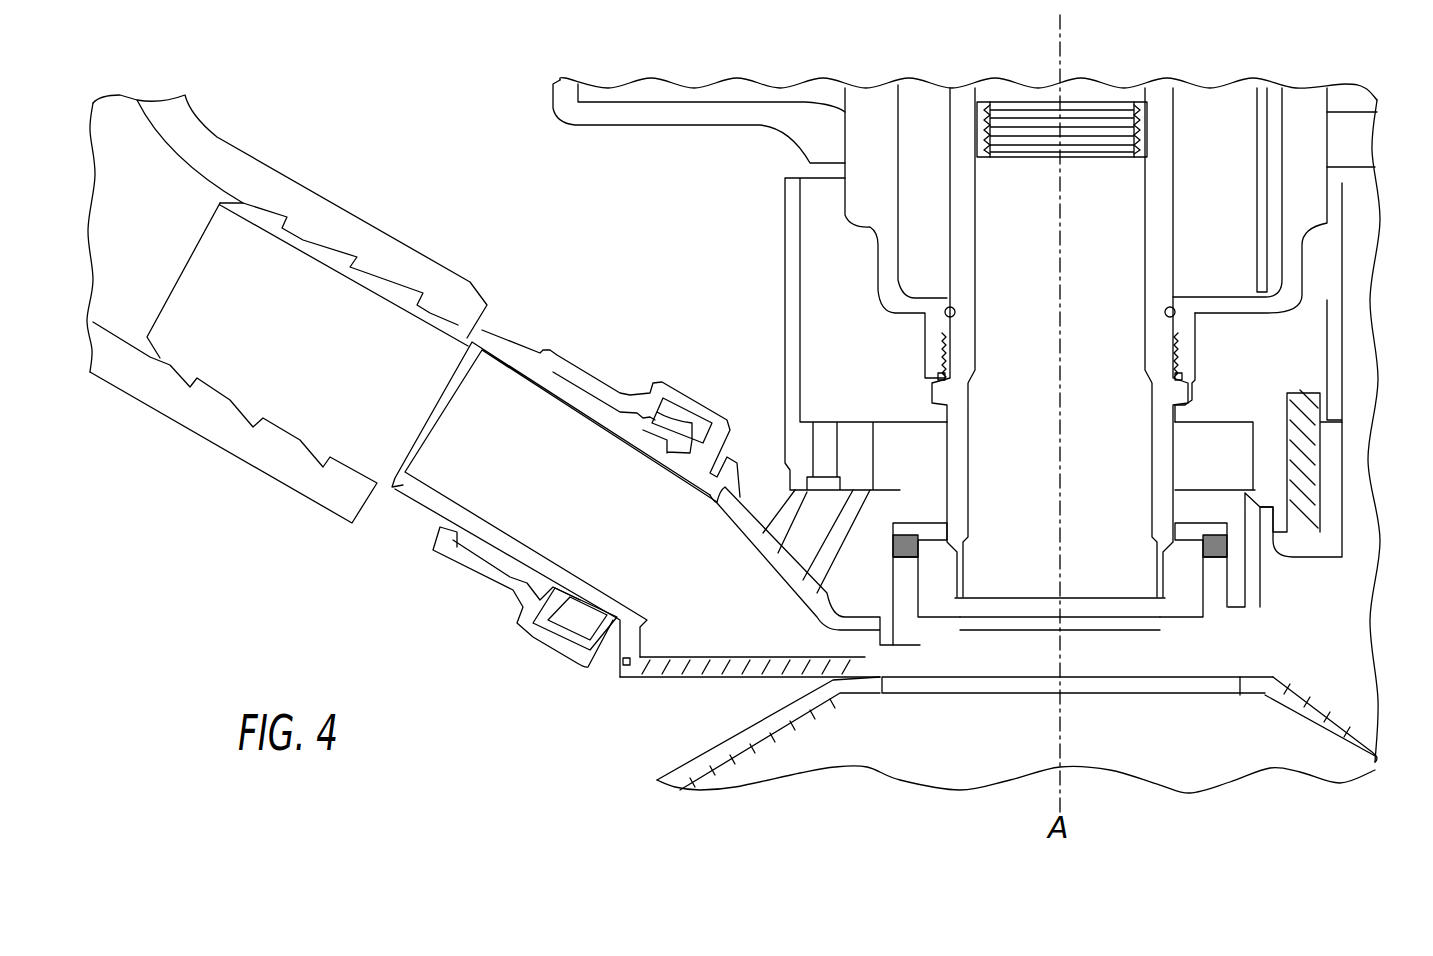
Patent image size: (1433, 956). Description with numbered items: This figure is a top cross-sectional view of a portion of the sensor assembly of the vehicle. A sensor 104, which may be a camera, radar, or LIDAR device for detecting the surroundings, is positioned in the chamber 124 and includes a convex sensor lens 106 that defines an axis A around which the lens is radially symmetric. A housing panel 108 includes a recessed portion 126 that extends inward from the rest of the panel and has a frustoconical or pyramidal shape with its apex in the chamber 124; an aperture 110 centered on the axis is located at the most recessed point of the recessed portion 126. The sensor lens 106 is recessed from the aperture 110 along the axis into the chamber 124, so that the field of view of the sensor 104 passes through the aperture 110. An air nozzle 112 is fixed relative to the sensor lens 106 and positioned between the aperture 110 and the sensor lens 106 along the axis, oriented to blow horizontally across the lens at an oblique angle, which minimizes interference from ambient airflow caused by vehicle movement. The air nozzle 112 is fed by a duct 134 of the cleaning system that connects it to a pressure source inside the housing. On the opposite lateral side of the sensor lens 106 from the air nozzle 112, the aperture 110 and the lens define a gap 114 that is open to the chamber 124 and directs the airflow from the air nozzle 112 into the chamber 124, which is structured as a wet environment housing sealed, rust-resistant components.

The sensor 104 is at (1293, 261).
The sensor lens 106 is at (1093, 632).
The housing panel 108 is at (720, 767).
The aperture 110 is at (887, 687).
The air nozzle 112 is at (683, 625).
The gap 114 is at (1258, 637).
The chamber 124 is at (1337, 626).
The recessed portion 126 is at (1327, 733).
The duct 134 is at (250, 170).